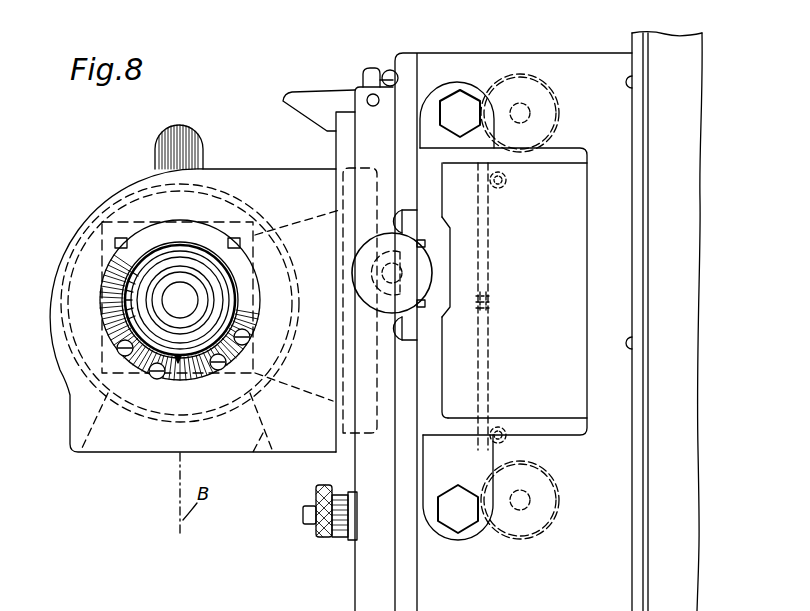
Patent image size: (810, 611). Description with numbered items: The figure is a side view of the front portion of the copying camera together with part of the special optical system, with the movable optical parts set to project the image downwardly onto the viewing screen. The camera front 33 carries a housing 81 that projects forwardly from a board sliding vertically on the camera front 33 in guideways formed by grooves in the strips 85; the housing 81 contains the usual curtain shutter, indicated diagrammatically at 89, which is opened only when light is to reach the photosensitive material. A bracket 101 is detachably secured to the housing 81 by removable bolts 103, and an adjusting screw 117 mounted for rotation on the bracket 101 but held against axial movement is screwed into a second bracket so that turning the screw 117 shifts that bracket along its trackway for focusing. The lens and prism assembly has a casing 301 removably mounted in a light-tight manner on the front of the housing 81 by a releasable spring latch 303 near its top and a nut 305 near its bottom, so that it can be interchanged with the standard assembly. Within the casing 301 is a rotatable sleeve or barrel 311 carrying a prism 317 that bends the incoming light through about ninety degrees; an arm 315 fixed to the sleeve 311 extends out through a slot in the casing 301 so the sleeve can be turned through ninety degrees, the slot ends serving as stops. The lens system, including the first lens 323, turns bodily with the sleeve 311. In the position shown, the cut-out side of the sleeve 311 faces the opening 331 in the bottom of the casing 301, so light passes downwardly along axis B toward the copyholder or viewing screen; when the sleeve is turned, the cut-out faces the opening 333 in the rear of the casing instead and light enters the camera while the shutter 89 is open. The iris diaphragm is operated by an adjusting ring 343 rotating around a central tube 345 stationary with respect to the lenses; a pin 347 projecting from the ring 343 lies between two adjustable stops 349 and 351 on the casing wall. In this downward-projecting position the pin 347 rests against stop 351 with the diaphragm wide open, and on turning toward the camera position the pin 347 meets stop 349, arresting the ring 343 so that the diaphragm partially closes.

The casing 301 is at (74, 400).
The releasable spring latch 303 is at (325, 100).
The nut 305 is at (322, 538).
The rotatable sleeve or barrel 311 is at (234, 202).
The arm 315 is at (202, 137).
The prism 317 is at (248, 224).
The lens 323 is at (192, 298).
The opening 331 is at (254, 452).
The opening 333 is at (325, 216).
The adjusting ring 343 is at (297, 262).
The central tube 345 is at (190, 297).
The pin 347 is at (178, 362).
The adjustable stop 349 is at (221, 371).
The adjustable stop 351 is at (166, 391).
The camera front 33 is at (700, 127).
The housing 81 is at (567, 43).
The strips 85 is at (638, 183).
The shutter 89 is at (489, 270).
The bracket 101 is at (578, 419).
The removable bolts 103 is at (462, 100).
The adjusting screw 117 is at (421, 253).